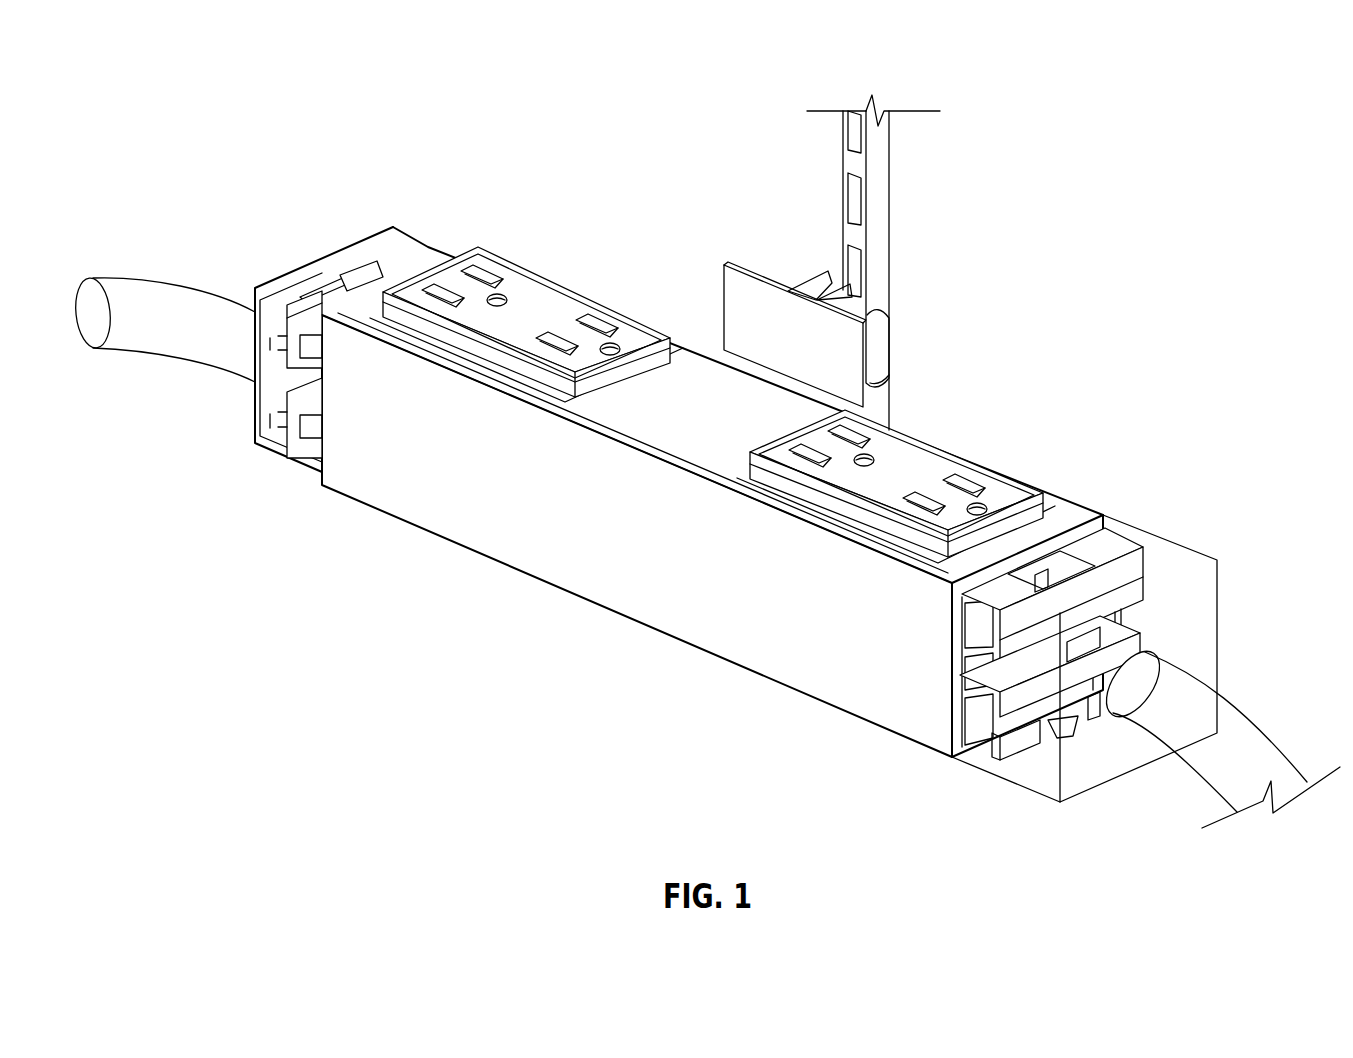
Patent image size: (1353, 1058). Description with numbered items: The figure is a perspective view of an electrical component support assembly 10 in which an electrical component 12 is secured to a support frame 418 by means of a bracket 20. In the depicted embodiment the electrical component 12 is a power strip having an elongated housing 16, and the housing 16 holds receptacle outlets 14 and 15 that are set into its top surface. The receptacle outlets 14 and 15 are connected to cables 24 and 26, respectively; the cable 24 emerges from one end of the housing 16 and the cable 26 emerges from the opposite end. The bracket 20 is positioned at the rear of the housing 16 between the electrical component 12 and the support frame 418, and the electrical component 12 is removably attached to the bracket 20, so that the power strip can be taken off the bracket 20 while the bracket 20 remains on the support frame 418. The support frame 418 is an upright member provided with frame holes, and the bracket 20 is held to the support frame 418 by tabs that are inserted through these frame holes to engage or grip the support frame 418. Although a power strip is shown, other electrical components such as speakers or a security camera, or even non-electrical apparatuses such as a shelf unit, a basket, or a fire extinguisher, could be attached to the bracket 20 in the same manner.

The electrical component support assembly 10 is at (365, 88).
The electrical component 12 is at (410, 515).
The receptacle outlet 14 is at (550, 294).
The receptacle outlet 15 is at (920, 452).
The housing 16 is at (655, 549).
The bracket 20 is at (752, 258).
The cable 24 is at (160, 357).
The cable 26 is at (1247, 737).
The support frame 418 is at (883, 193).